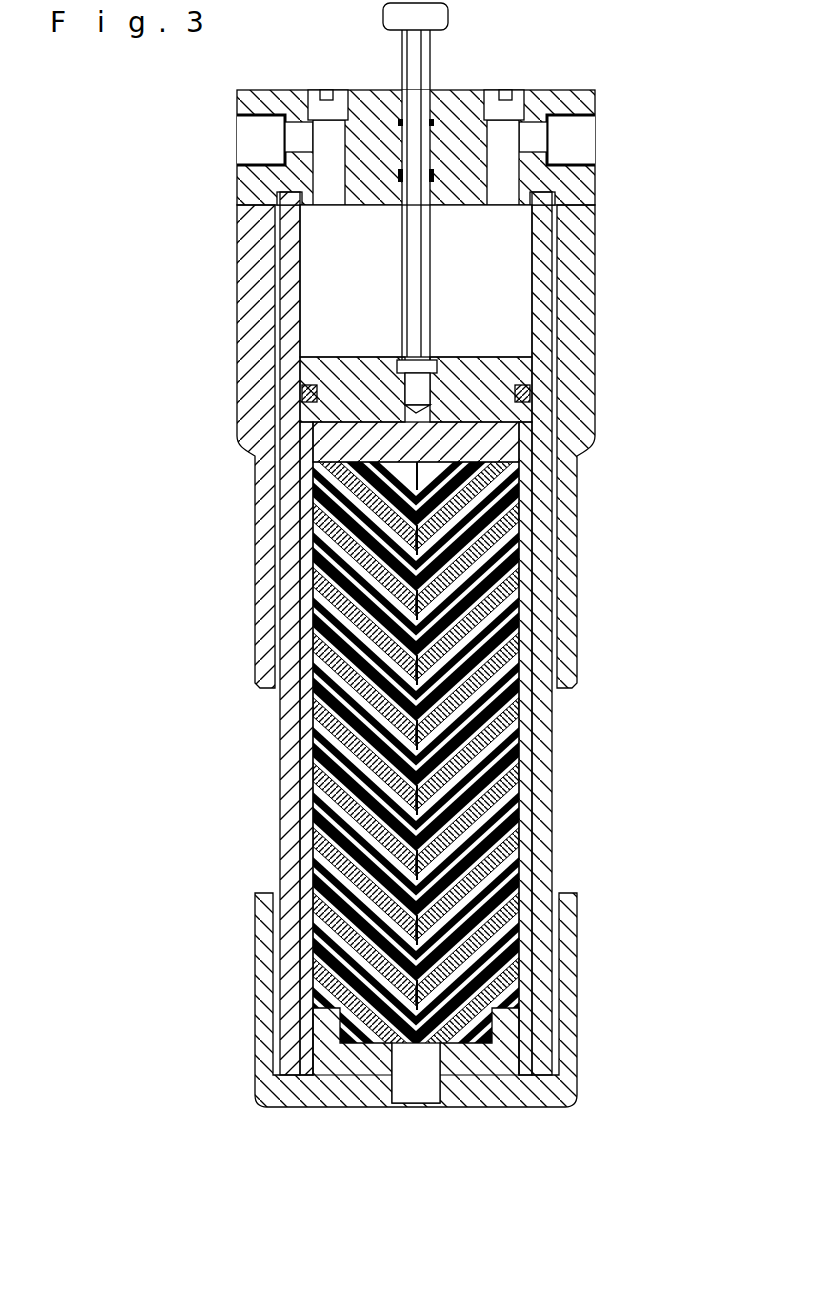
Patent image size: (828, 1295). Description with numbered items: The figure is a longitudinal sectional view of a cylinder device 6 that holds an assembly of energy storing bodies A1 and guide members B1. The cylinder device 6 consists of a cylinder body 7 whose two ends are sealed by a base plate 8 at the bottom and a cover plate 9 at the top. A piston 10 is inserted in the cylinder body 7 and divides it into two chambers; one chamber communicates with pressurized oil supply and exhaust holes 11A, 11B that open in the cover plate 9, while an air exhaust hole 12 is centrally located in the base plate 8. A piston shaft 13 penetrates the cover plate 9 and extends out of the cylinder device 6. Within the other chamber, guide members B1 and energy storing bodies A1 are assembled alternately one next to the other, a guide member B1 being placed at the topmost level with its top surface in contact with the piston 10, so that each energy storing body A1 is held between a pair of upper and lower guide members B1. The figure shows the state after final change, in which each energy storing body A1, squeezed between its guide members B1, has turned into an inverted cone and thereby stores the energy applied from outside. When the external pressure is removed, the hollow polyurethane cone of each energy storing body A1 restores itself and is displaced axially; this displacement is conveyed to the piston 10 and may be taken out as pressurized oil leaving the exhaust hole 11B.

The cylinder device 6 is at (664, 327).
The cylinder body 7 is at (535, 716).
The base plate 8 is at (567, 931).
The cover plate 9 is at (583, 245).
The piston 10 is at (513, 371).
The pressurized oil supply and exhaust hole 11A is at (597, 134).
The pressurized oil supply and exhaust hole 11B is at (237, 155).
The air exhaust hole 12 is at (423, 1095).
The piston shaft 13 is at (402, 72).
The energy storing body A1 is at (513, 580).
The guide member B1 is at (513, 528).